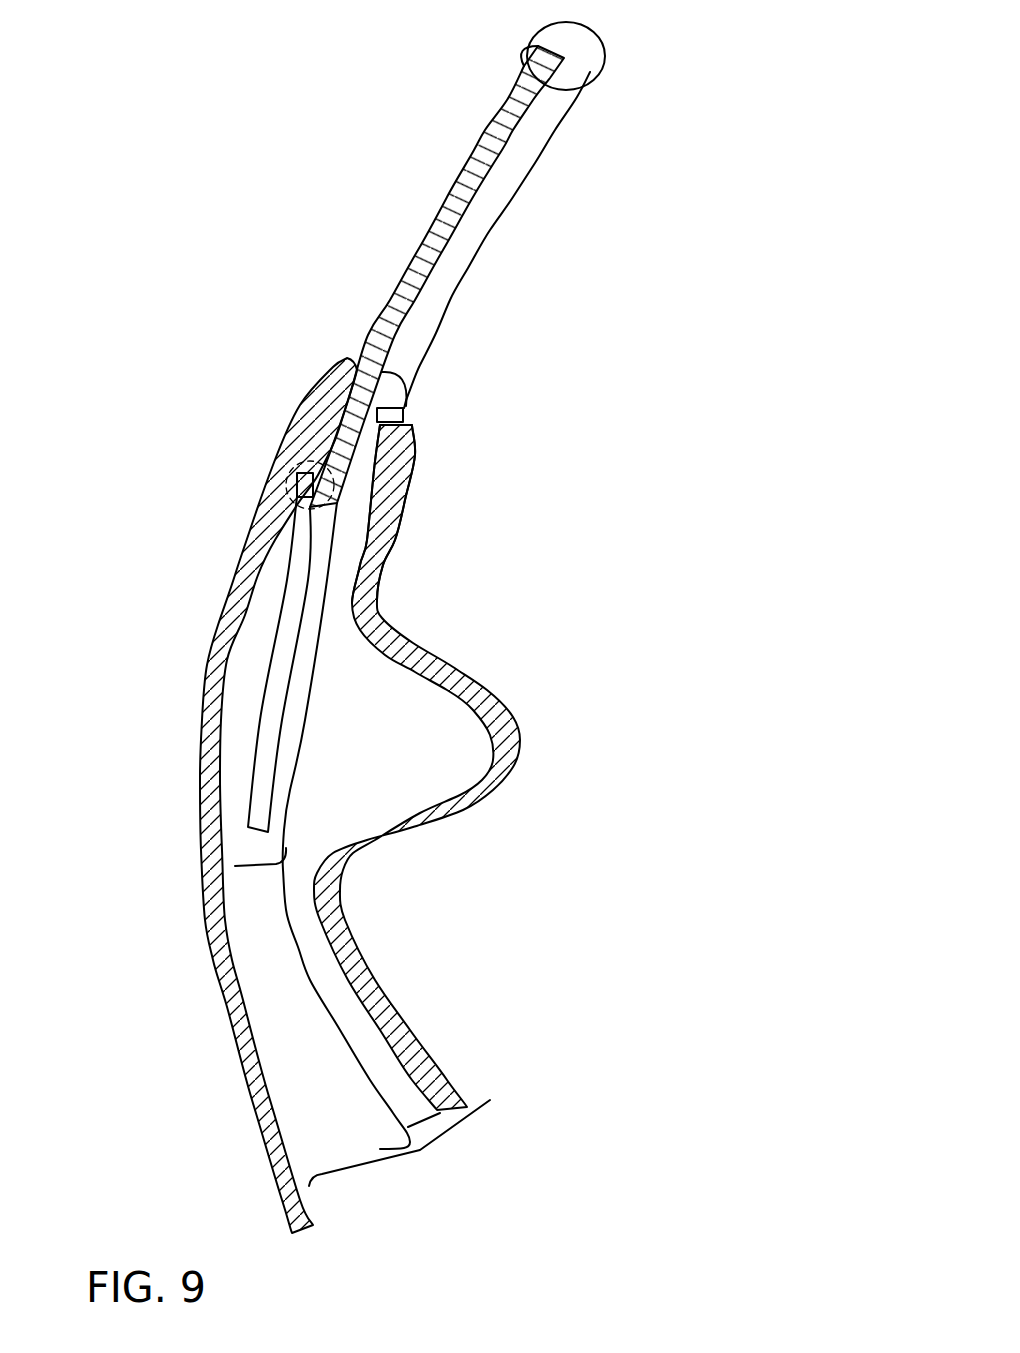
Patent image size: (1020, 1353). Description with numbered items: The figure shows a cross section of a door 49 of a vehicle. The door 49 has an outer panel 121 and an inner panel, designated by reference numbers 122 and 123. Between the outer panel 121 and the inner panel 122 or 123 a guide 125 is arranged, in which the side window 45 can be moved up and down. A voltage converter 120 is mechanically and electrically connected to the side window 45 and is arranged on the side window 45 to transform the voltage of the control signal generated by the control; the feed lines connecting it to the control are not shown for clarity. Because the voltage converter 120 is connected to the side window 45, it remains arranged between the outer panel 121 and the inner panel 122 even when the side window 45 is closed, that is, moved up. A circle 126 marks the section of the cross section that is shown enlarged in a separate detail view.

The door 49 is at (648, 183).
The side window 45 is at (393, 312).
The voltage converter 120 is at (305, 482).
The outer panel 121 is at (217, 665).
The inner panel 122 is at (385, 508).
The inner panel 123 is at (430, 815).
The guide 125 is at (252, 773).
The circle 126 is at (297, 503).